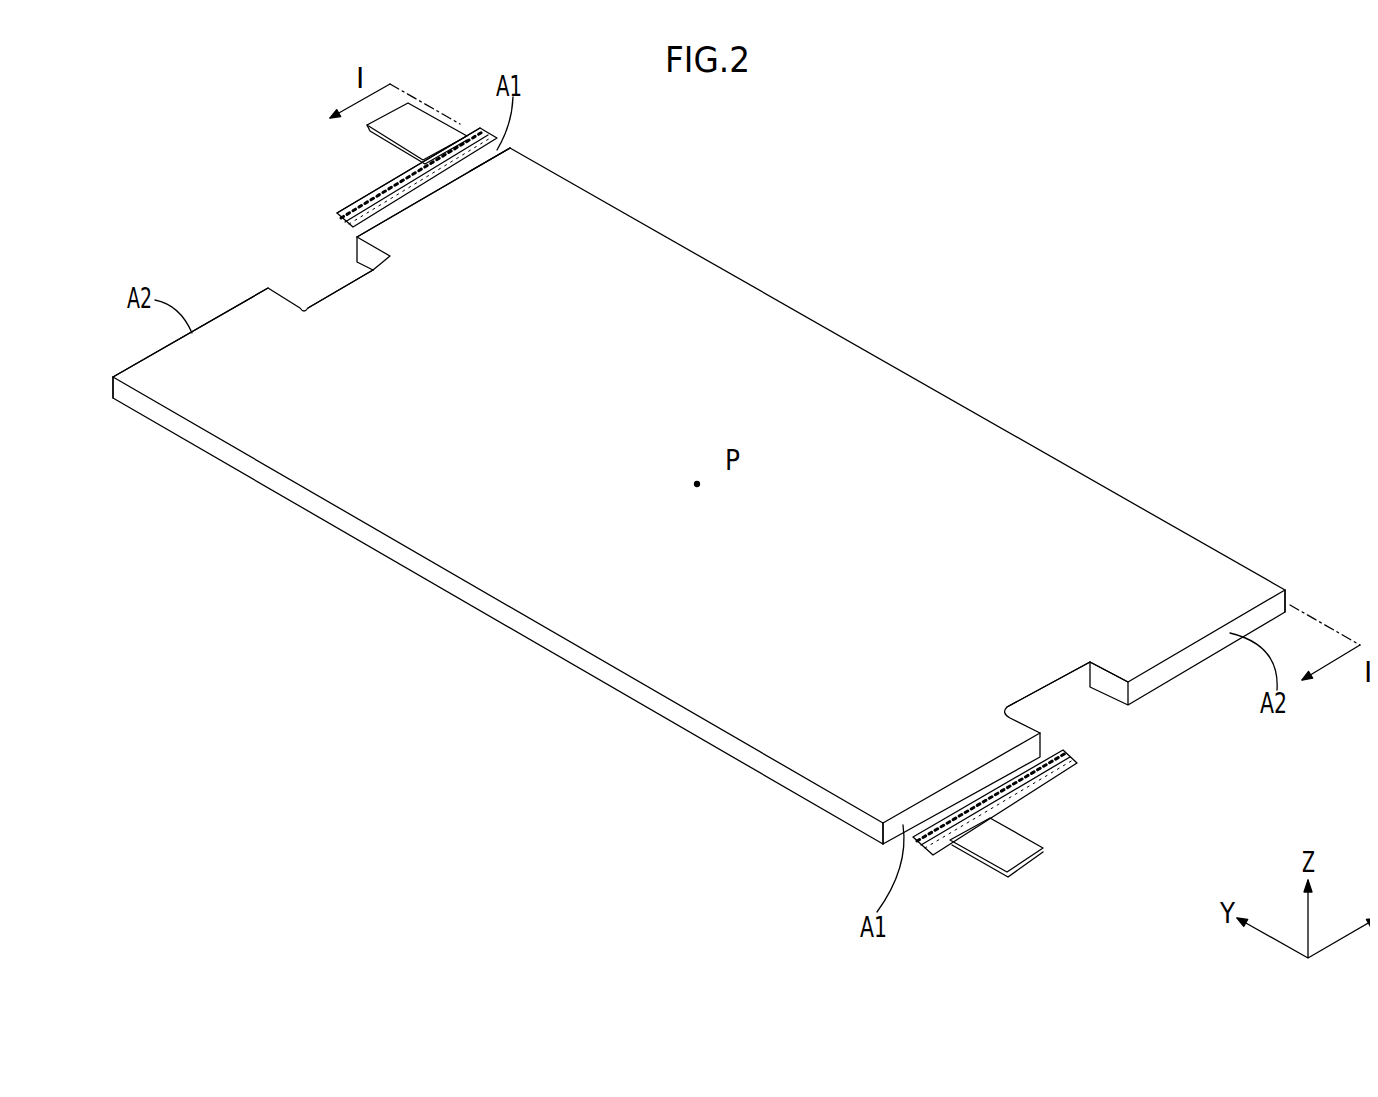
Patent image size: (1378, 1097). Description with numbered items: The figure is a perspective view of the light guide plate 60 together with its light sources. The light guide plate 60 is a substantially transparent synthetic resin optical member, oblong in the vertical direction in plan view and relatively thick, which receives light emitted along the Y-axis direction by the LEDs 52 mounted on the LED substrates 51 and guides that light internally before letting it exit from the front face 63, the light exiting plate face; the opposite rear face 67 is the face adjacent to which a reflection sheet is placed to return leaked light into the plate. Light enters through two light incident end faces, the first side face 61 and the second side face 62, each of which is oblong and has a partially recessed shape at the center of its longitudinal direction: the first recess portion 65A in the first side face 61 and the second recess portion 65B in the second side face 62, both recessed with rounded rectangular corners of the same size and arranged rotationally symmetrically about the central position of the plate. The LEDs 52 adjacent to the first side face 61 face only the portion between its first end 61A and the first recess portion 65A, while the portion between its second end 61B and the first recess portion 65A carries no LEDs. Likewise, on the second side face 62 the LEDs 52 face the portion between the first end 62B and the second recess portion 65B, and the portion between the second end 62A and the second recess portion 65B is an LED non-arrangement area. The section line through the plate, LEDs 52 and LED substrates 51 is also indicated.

The LED substrate 51 is at (423, 160).
The LED 52 is at (350, 198).
The light guide plate 60 is at (694, 508).
The first side face 61 is at (1180, 668).
The first end of the first side face 61A is at (887, 837).
The second end of the first side face 61B is at (1288, 602).
The second side face 62 is at (143, 360).
The second end of the second side face 62A is at (113, 390).
The first end of the second side face 62B is at (510, 146).
The front face 63 is at (1050, 480).
The first recess portion 65A is at (1050, 695).
The second recess portion 65B is at (345, 283).
The rear face 67 is at (160, 427).